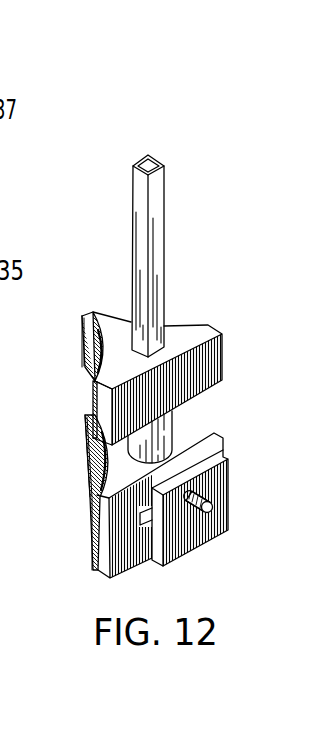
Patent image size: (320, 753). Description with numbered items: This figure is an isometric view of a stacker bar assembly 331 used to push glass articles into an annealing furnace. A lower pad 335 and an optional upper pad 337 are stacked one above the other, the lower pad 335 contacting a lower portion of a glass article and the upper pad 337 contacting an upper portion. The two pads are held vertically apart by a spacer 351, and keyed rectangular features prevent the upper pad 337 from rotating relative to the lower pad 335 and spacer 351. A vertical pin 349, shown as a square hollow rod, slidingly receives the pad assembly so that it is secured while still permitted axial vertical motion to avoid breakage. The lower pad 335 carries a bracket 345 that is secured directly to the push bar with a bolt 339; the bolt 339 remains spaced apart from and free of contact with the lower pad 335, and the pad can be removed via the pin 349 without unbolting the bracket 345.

The stacker bar assembly 331 is at (248, 138).
The vertical pin 349 is at (153, 220).
The upper pad 337 is at (203, 362).
The spacer 351 is at (158, 432).
The lower pad 335 is at (88, 465).
The bracket 345 is at (193, 547).
The bolt 339 is at (212, 508).